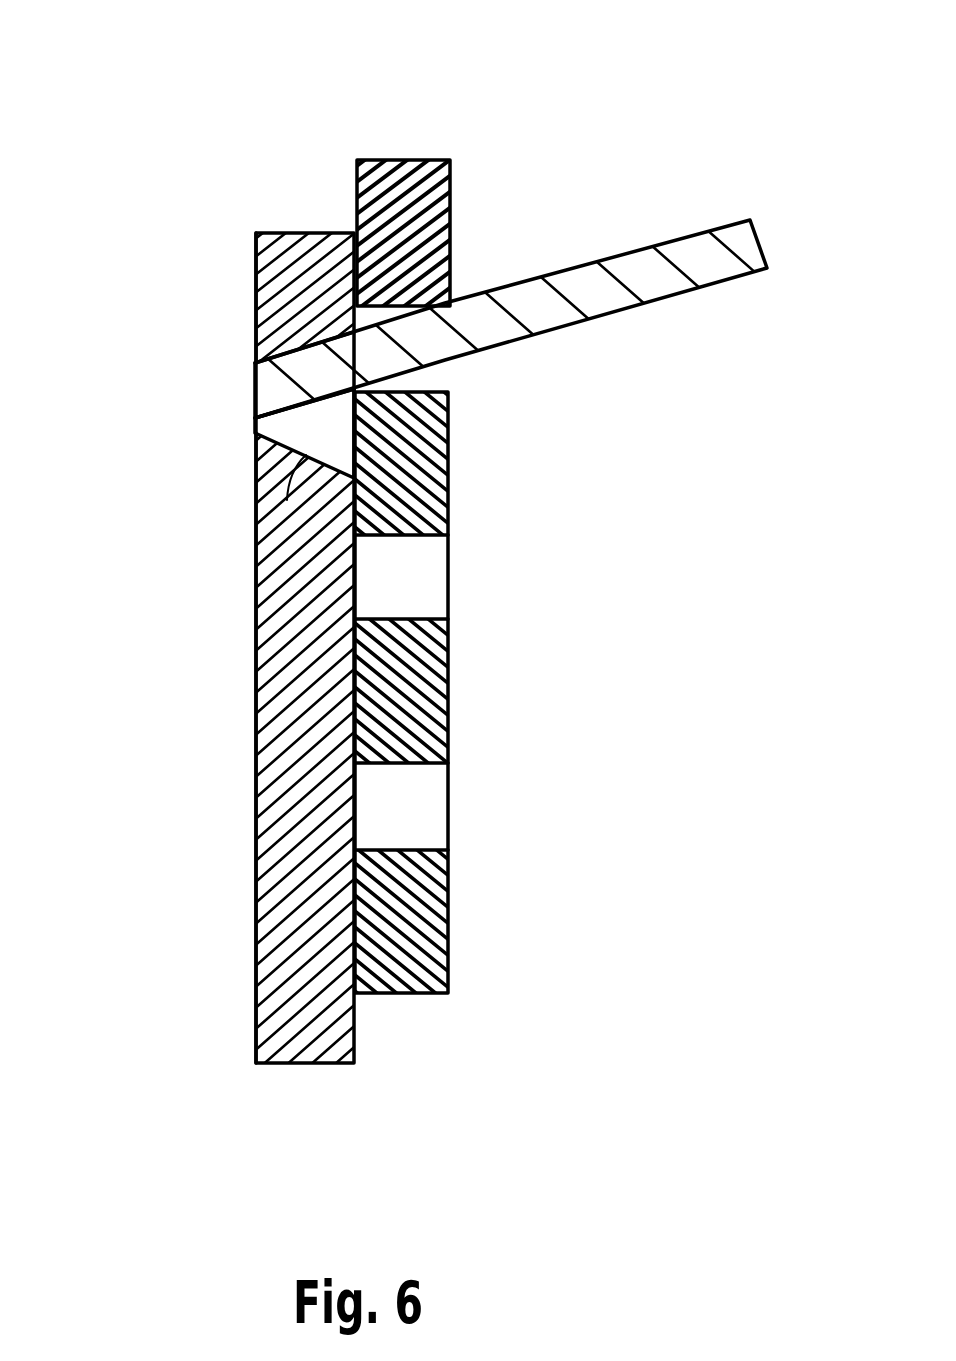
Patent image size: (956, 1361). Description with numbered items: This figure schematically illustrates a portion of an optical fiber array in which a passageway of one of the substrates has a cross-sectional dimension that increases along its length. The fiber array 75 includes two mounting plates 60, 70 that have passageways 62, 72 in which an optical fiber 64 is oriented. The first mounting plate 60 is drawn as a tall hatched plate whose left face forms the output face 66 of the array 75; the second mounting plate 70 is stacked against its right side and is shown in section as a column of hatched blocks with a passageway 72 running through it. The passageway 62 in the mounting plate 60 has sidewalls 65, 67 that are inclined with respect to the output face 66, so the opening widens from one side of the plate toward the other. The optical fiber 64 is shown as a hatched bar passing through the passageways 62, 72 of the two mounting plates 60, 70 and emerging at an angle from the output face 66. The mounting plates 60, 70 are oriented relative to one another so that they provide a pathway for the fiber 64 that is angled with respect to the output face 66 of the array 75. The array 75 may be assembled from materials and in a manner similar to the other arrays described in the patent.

The fiber array 75 is at (338, 125).
The mounting plate 60 is at (280, 233).
The output face 66 is at (255, 258).
The sidewall 65 is at (277, 342).
The passageway 62 is at (277, 427).
The sidewall 67 is at (255, 527).
The mounting plate 70 is at (405, 158).
The passageway 72 is at (447, 371).
The optical fiber 64 is at (663, 297).